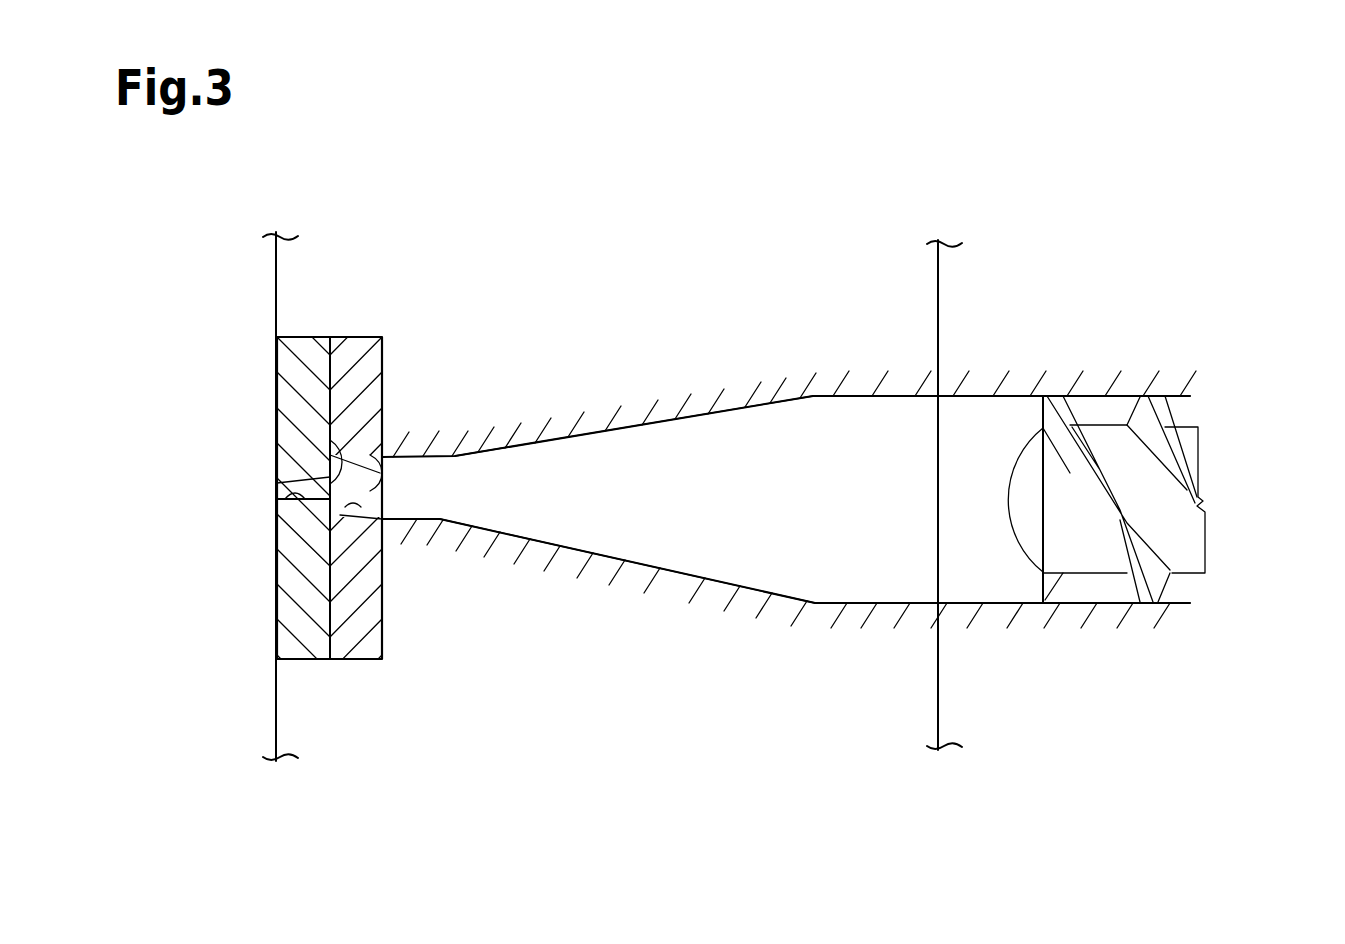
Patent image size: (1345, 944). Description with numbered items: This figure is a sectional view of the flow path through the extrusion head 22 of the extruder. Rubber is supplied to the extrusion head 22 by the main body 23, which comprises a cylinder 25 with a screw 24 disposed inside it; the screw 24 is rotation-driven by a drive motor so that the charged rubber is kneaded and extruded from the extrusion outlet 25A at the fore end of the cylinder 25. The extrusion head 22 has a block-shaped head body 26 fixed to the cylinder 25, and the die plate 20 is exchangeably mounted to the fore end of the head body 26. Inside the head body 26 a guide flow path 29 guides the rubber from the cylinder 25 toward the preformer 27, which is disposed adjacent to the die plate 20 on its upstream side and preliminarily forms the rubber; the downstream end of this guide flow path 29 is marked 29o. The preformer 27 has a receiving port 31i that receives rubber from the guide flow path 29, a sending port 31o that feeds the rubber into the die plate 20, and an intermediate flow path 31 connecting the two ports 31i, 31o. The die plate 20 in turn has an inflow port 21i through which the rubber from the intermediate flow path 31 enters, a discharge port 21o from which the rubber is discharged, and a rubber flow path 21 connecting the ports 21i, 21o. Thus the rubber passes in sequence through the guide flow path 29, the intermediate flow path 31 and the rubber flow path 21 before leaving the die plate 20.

The die plate 20 is at (300, 337).
The rubber flow path 21 is at (277, 533).
The inflow port 21i is at (330, 424).
The discharge port 21o is at (277, 485).
The extrusion head 22 is at (819, 307).
The main body 23 is at (1034, 302).
The screw 24 is at (1200, 434).
The cylinder 25 is at (1110, 396).
The extrusion outlet 25A is at (937, 557).
The head body 26 is at (757, 334).
The preformer 27 is at (358, 337).
The guide flow path 29 is at (777, 507).
The bore outlet 29o is at (368, 446).
The intermediate flow path 31 is at (382, 527).
The receiving port 31i is at (425, 522).
The sending port 31o is at (277, 567).